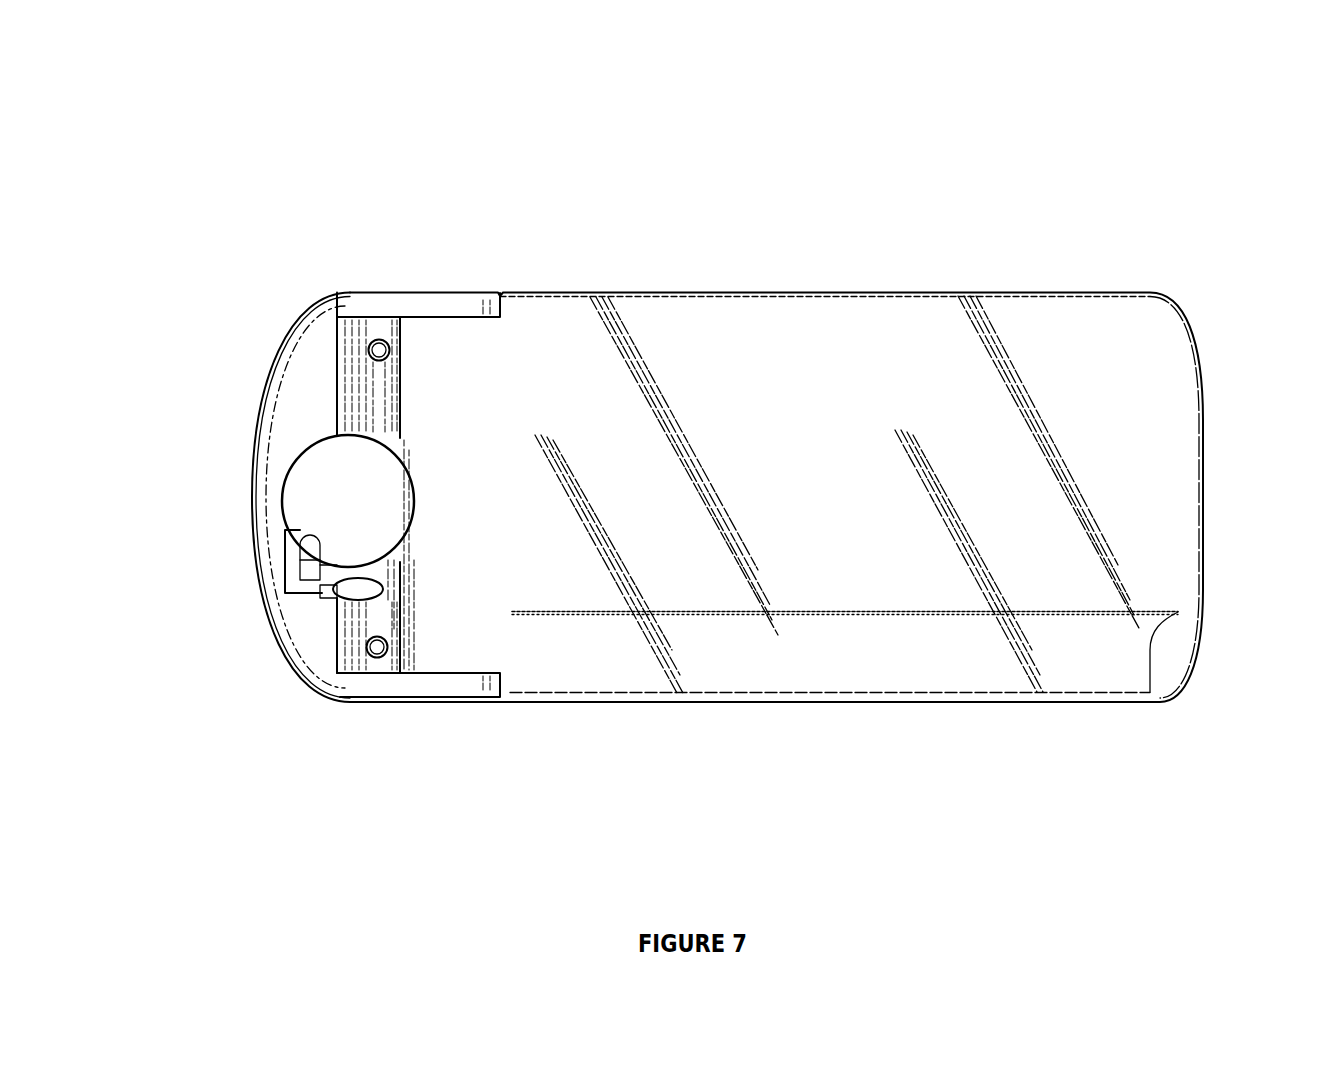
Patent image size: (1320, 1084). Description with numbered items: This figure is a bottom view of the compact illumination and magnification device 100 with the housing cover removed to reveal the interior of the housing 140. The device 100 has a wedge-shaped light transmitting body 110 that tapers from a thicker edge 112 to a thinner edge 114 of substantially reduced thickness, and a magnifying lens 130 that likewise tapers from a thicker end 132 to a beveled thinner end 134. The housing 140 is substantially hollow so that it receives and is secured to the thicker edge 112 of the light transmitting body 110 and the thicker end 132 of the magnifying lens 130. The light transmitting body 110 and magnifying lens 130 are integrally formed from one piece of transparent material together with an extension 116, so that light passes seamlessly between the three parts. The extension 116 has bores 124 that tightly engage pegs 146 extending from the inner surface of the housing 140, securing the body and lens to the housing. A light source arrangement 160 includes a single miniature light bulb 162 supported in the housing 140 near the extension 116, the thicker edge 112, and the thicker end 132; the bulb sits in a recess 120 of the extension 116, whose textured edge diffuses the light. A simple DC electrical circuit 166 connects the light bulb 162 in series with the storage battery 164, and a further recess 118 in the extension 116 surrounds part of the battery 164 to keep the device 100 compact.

The compact illumination and magnification device 100 is at (935, 197).
The light transmitting body 110 is at (862, 415).
The thicker edge 112 is at (513, 465).
The thinner edge 114 is at (1200, 368).
The extension 116 is at (446, 368).
The recess 118 is at (501, 700).
The recess 120 is at (405, 547).
The bores 124 is at (380, 340).
The magnifying lens 130 is at (842, 650).
The thicker end 132 is at (523, 650).
The thinner end 134 is at (1177, 640).
The housing 140 is at (303, 352).
The pegs 146 is at (372, 342).
The light source arrangement 160 is at (268, 563).
The light bulb 162 is at (338, 592).
The storage battery 164 is at (328, 493).
The DC electrical circuit 166 is at (290, 568).